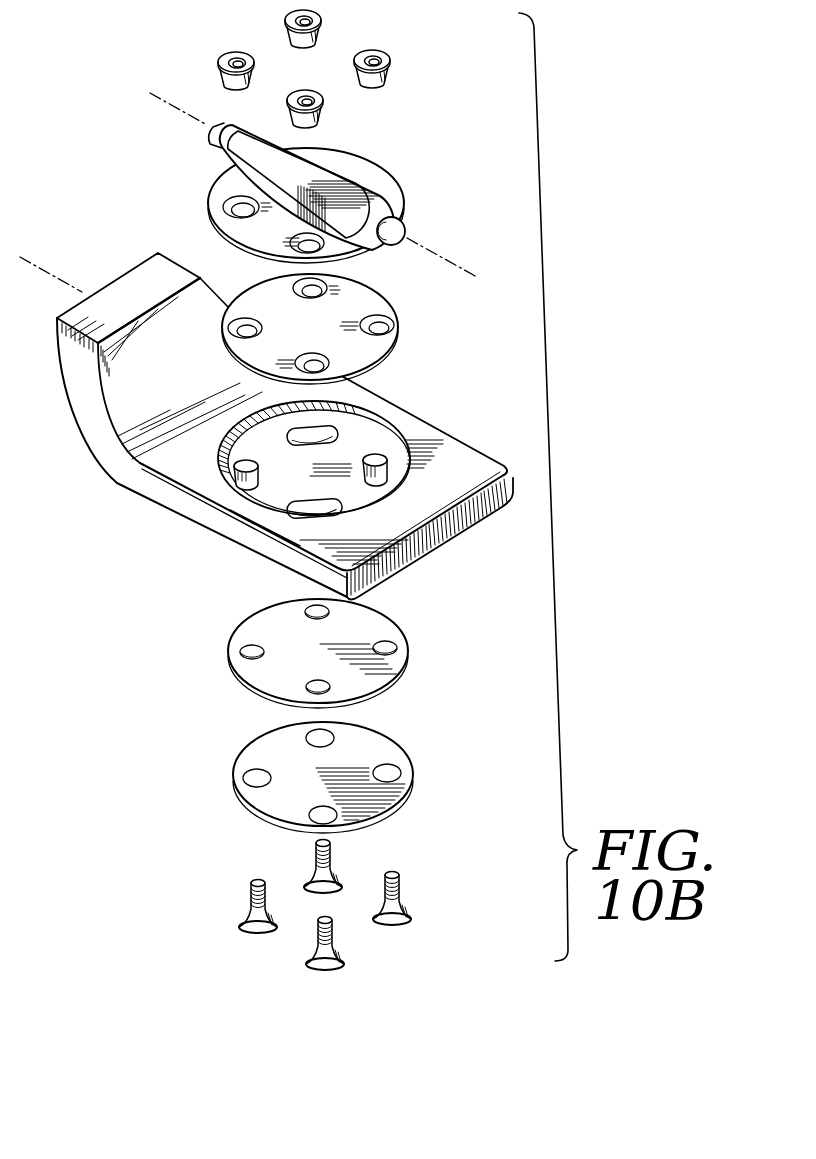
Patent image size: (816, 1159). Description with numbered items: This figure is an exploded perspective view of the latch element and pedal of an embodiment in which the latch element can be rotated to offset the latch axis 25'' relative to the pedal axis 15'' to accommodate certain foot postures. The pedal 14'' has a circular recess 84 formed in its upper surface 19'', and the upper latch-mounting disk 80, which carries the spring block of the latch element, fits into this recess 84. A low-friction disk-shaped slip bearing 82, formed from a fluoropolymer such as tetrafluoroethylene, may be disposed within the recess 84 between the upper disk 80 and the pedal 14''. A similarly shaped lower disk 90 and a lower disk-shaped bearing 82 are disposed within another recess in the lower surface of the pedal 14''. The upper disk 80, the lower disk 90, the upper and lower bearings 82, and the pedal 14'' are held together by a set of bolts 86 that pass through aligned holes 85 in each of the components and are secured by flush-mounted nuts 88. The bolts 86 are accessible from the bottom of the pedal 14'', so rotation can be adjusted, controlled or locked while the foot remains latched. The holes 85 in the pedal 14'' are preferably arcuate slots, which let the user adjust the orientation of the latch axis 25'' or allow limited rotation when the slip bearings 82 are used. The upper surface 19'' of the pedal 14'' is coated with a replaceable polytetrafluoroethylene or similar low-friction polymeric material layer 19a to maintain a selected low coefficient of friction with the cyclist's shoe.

The pedal 14'' is at (202, 425).
The pedal axis 15'' is at (67, 273).
The upper surface 19'' is at (326, 482).
The low friction polymeric material layer 19a is at (282, 525).
The latch axis 25'' is at (450, 256).
The upper disk 80 is at (366, 163).
The slip bearing 82 is at (362, 292).
The circular recess 84 is at (367, 435).
The holes 85 is at (237, 465).
The bolts 86 is at (312, 860).
The flush-mounted nuts 88 is at (322, 21).
The lower disk 90 is at (373, 742).